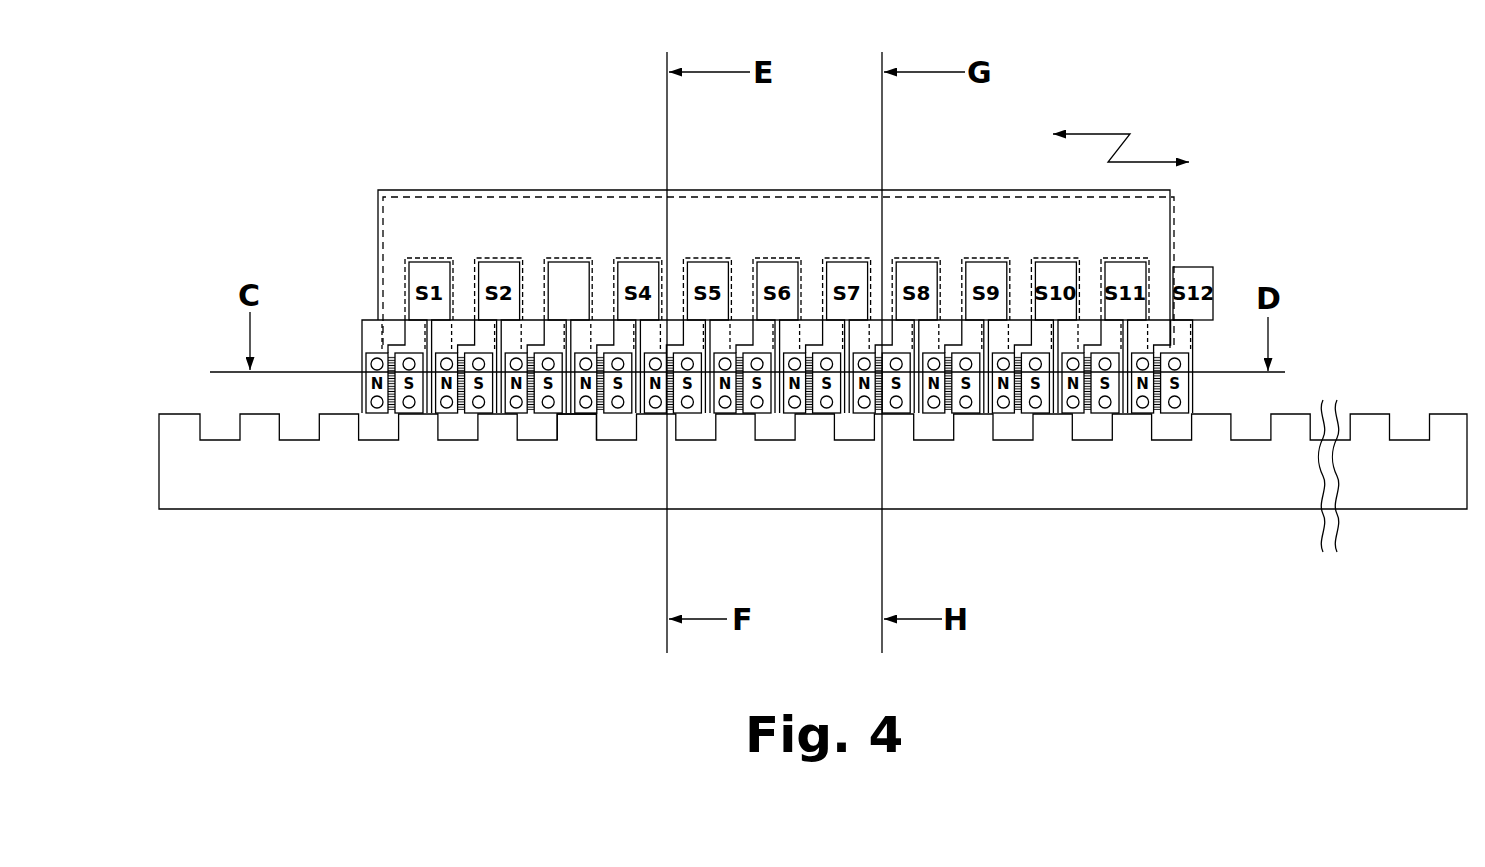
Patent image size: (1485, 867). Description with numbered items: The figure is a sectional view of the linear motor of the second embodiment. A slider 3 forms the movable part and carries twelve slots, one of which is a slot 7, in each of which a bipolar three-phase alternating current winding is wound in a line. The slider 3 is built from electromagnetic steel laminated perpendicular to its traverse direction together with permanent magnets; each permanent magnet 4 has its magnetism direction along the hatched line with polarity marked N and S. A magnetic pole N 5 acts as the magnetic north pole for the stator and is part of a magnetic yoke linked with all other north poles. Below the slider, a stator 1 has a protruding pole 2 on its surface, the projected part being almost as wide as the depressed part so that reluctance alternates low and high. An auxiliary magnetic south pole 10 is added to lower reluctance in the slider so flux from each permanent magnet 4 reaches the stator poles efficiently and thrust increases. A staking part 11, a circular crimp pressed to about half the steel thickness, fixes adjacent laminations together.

The stator 1 is at (818, 483).
The protruding pole 2 is at (583, 428).
The slider 3 is at (818, 217).
The permanent magnet 4 is at (530, 413).
The magnetic pole N 5 is at (508, 413).
The slot 7 is at (566, 272).
The auxiliary magnetic south pole 10 is at (558, 413).
The staking part 11 is at (410, 408).